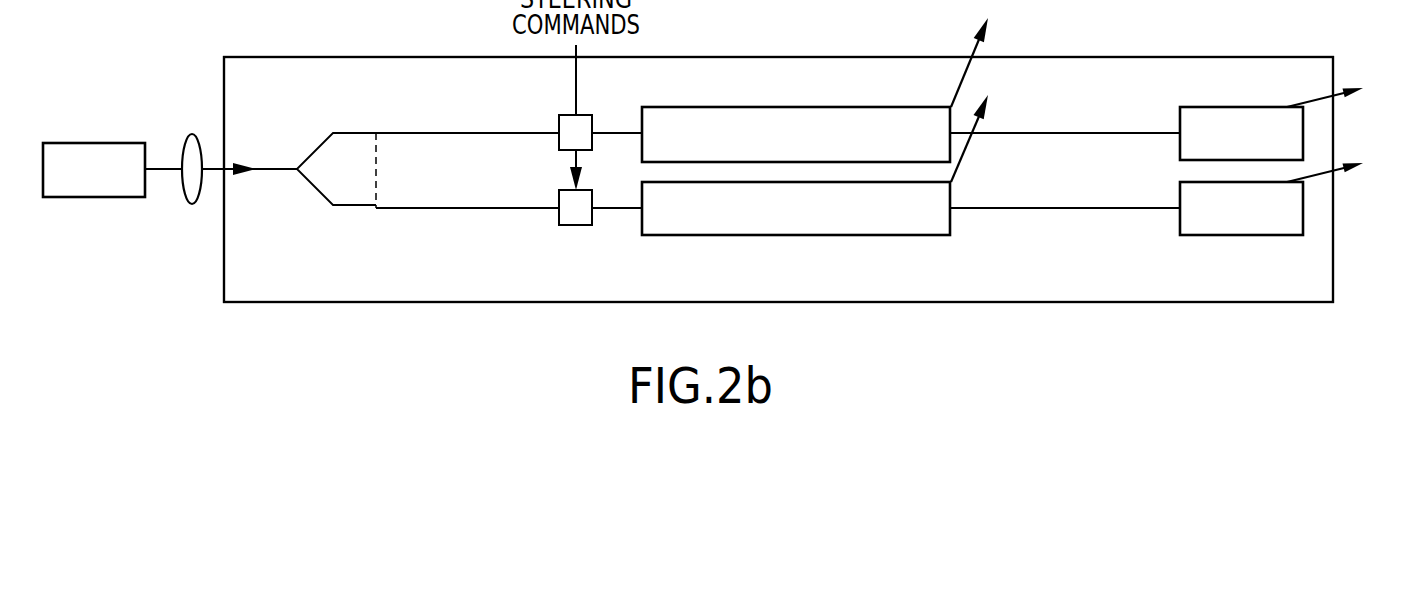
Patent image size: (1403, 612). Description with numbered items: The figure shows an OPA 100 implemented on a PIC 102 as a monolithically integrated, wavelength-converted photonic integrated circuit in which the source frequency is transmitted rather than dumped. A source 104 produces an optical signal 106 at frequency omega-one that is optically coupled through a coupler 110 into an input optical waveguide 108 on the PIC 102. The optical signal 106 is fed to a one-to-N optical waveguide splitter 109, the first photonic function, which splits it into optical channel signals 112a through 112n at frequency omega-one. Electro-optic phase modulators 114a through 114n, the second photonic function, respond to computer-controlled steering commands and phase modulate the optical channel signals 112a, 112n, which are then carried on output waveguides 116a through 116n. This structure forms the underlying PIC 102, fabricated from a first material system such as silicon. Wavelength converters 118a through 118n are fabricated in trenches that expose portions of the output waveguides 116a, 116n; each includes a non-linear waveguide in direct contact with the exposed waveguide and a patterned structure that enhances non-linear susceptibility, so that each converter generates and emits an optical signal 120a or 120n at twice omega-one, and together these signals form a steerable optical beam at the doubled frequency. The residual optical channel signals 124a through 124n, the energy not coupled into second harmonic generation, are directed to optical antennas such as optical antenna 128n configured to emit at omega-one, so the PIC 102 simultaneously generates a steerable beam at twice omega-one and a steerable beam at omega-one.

The OPA 100 is at (132, 48).
The PIC 102 is at (277, 293).
The source 104 is at (90, 145).
The optical signal 106 is at (281, 131).
The input optical waveguide 108 is at (215, 168).
The 1-to-N optical waveguide splitter 109 is at (318, 193).
The coupler 110 is at (192, 134).
The optical channel signal 112a is at (445, 133).
The optical channel signal 112n is at (445, 208).
The electro-optic phase modulator 114a is at (575, 90).
The electro-optic phase modulator 114n is at (560, 195).
The output waveguide 116a is at (593, 122).
The output waveguide 116n is at (587, 225).
The wavelength converter 118a is at (738, 107).
The wavelength converter 118n is at (768, 235).
The optical signal 120a is at (957, 92).
The optical signal 120n is at (958, 160).
The residual optical channel signal 124a is at (1068, 133).
The residual optical channel signal 124n is at (1068, 208).
The optical antenna 128n is at (1270, 107).